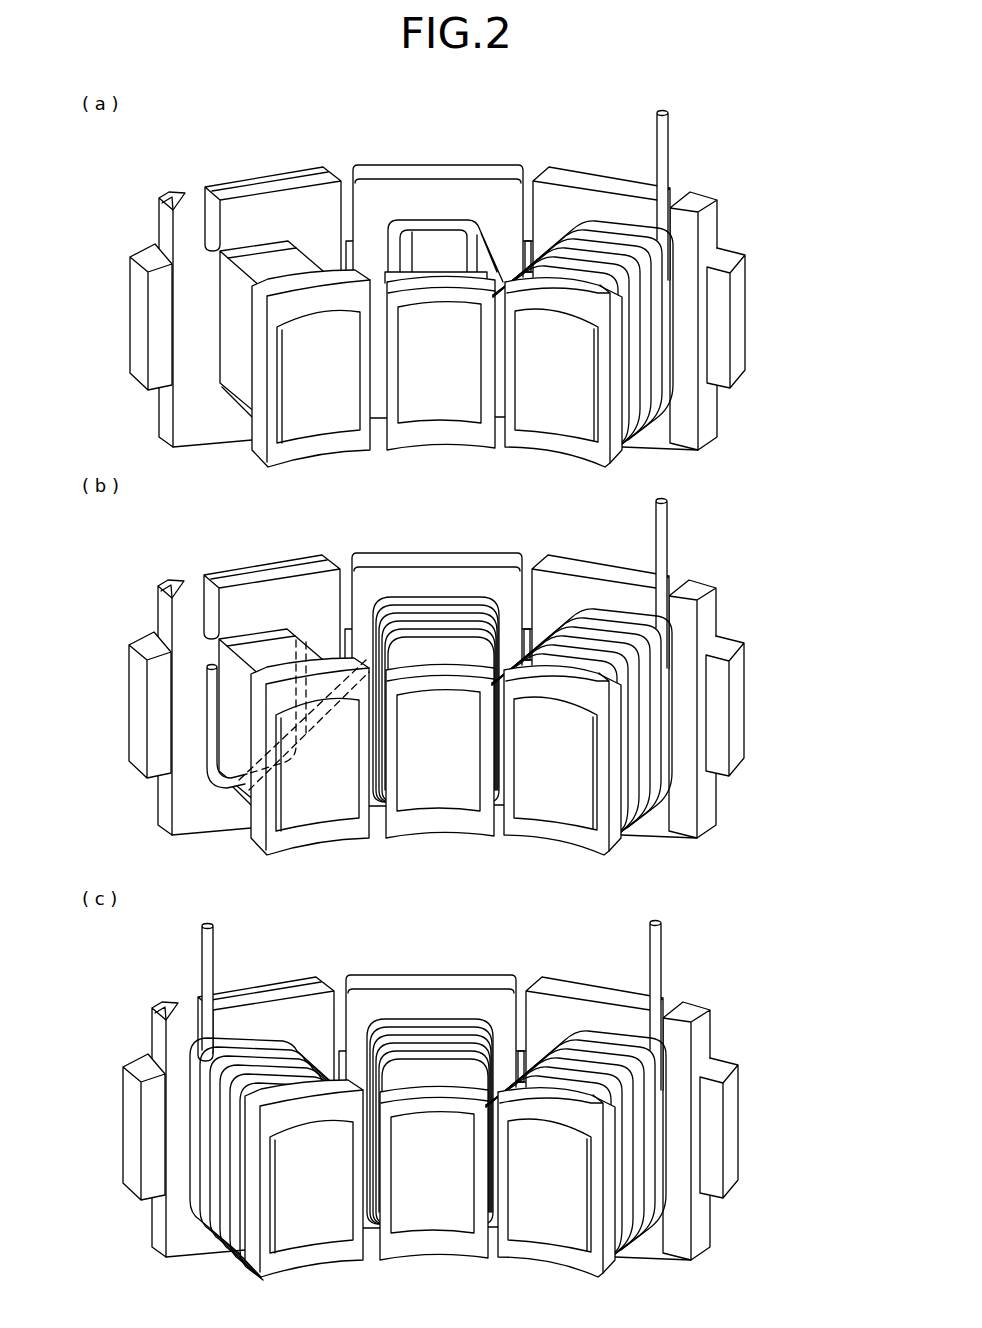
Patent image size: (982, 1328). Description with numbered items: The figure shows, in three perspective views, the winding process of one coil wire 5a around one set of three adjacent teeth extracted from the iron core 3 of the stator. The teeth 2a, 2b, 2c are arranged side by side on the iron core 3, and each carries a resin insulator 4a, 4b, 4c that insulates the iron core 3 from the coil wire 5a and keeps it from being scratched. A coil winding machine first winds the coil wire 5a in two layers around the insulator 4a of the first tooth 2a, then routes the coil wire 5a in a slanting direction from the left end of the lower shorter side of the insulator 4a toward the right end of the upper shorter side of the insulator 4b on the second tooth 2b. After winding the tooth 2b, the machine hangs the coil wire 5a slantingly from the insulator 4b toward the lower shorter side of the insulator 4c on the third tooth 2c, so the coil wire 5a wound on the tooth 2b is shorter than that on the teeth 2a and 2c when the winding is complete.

The tooth 2a is at (575, 157).
The tooth 2b is at (456, 158).
The tooth 2c is at (230, 161).
The iron core 3 is at (744, 307).
The insulator 4a is at (625, 203).
The insulator 4b is at (392, 183).
The insulator 4c is at (305, 177).
The coil wire 5a is at (664, 160).